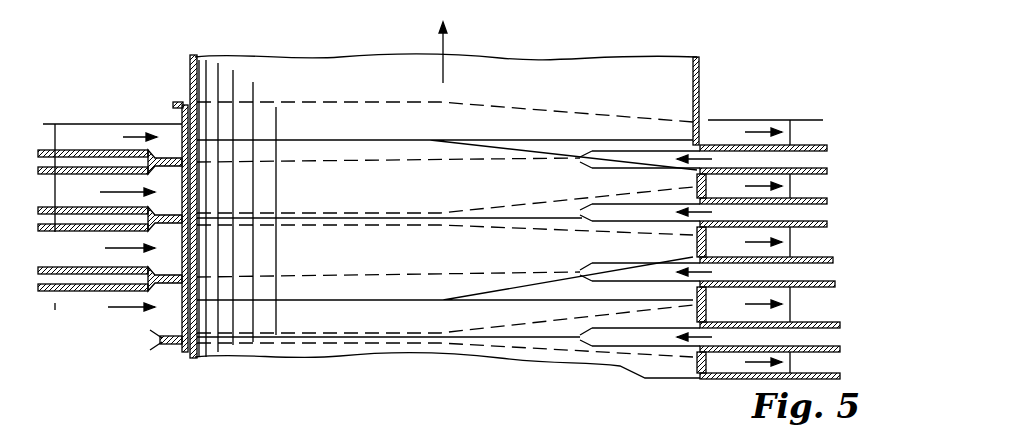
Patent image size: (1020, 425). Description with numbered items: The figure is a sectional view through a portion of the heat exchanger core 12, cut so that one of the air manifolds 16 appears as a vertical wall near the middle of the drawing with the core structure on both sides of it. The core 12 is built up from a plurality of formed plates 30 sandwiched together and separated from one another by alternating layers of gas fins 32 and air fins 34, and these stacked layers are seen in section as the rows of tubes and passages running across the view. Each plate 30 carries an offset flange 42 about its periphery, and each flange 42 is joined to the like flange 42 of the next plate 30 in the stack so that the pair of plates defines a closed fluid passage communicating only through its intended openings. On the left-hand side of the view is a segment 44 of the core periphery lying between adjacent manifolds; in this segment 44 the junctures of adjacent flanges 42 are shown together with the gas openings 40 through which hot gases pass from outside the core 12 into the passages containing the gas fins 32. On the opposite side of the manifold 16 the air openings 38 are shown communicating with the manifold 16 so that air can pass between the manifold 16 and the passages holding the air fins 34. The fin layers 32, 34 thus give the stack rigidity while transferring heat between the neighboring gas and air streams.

The core section 12 is at (789, 63).
The air manifold 16 is at (562, 54).
The formed plate 30 is at (828, 146).
The gas fins 32 is at (823, 183).
The air fins 34 is at (823, 158).
The air openings 38 is at (646, 160).
The gas openings 40 is at (72, 192).
The offset flange 42 is at (127, 160).
The segment 44 is at (105, 66).